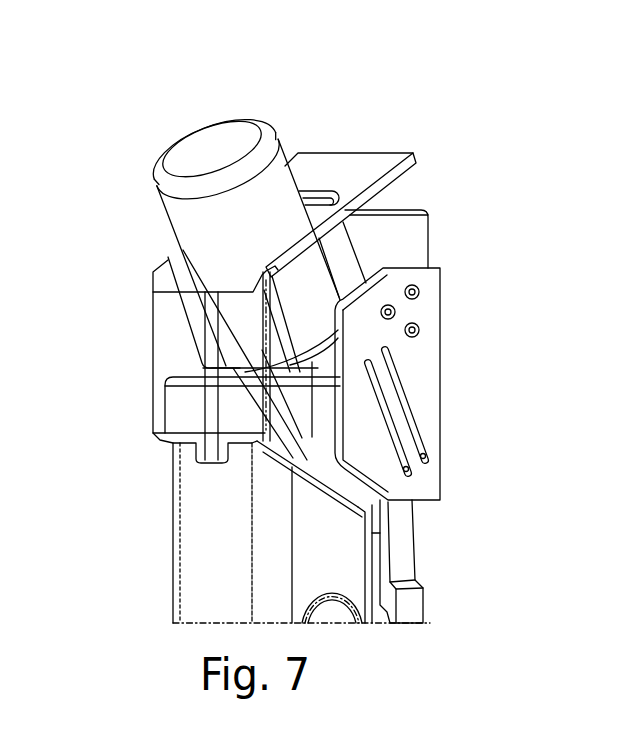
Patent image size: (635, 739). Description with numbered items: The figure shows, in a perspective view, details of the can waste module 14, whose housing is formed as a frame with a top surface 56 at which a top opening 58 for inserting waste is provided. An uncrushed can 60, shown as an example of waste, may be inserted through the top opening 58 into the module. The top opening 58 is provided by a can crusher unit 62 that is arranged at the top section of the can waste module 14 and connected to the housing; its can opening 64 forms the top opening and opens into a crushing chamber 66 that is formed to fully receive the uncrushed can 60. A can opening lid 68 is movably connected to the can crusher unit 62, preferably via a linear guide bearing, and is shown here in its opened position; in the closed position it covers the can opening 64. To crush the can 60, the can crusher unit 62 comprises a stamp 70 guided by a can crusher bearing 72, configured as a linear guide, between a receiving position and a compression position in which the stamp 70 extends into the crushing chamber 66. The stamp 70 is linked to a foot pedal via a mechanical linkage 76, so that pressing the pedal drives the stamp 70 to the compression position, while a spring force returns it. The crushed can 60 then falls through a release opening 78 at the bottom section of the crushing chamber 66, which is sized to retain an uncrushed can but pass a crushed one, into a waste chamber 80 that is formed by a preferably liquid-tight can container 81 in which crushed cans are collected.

The can waste module 14 is at (492, 158).
The top surface 56 is at (314, 106).
The top opening 58 is at (207, 315).
The can 60 is at (234, 105).
The can crusher unit 62 is at (458, 340).
The can opening 64 is at (172, 254).
The crushing chamber 66 is at (190, 317).
The can opening lid 68 is at (356, 168).
The stamp 70 is at (360, 492).
The can crusher bearing 72 is at (429, 424).
The mechanical linkage 76 is at (424, 565).
The release opening 78 is at (200, 424).
The waste chamber 80 is at (168, 568).
The can container 81 is at (168, 605).